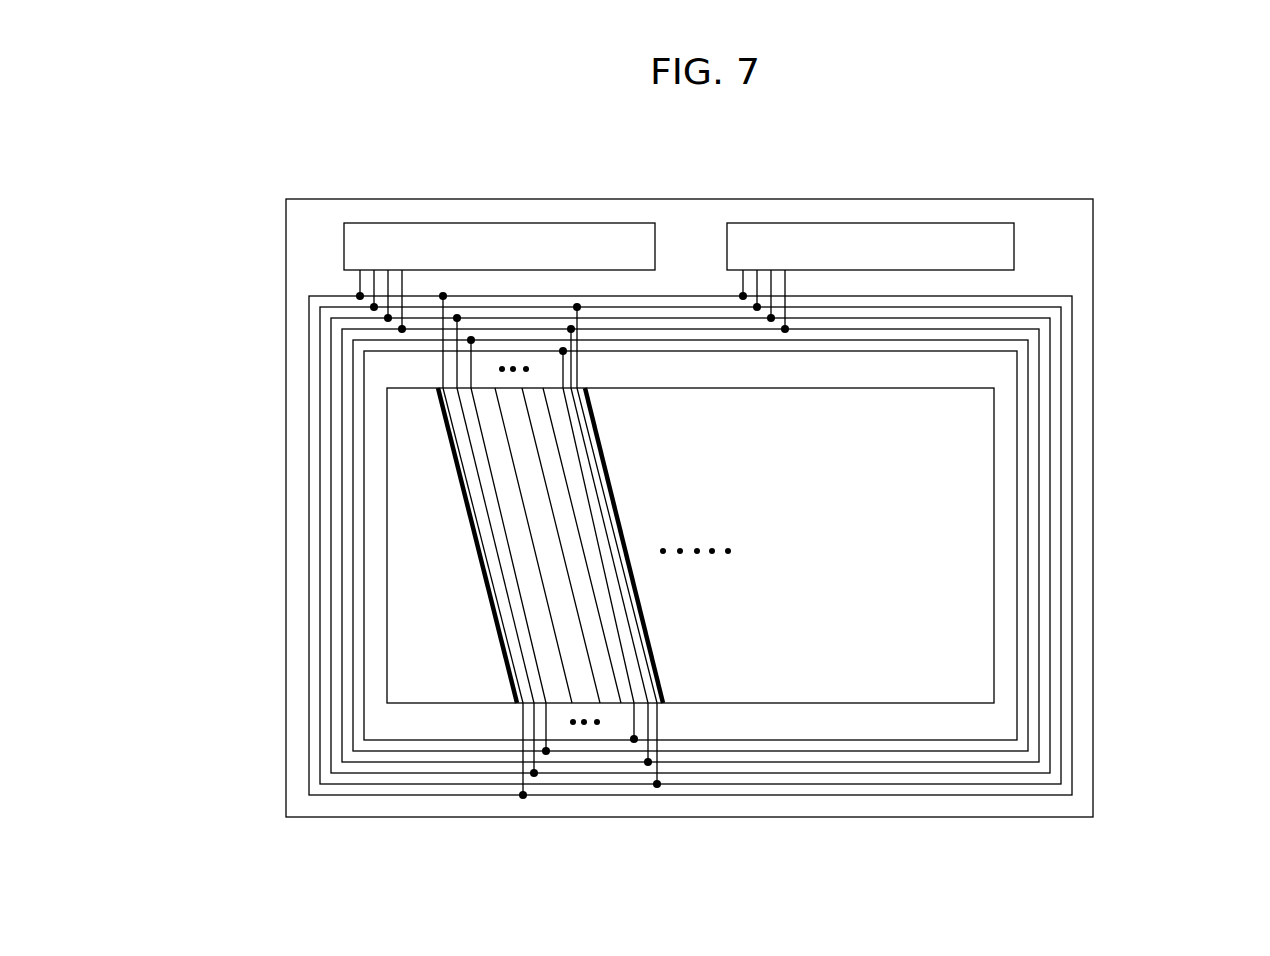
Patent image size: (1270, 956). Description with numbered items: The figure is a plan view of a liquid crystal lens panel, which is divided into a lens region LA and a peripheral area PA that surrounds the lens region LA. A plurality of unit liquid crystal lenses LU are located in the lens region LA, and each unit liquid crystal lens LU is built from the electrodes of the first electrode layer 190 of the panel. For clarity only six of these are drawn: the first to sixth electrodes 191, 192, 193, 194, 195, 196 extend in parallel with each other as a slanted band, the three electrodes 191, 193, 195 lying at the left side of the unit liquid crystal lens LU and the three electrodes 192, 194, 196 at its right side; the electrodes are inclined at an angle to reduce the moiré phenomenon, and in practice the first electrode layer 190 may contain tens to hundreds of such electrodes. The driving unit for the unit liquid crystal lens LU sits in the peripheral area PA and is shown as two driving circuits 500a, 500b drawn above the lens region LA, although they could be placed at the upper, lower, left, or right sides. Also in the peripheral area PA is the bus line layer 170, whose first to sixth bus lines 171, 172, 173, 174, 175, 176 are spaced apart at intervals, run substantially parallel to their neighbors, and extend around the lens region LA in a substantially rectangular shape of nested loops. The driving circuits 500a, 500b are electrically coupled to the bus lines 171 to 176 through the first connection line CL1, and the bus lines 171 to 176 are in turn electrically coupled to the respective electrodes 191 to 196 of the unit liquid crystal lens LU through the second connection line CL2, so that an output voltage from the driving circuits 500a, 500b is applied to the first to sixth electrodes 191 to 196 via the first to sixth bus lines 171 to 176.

The driving circuit 500a is at (452, 222).
The driving circuit 500b is at (798, 222).
The peripheral area PA is at (1031, 233).
The lens region LA is at (941, 640).
The unit liquid crystal lens LU is at (636, 485).
The first connection line CL1 is at (360, 288).
The second connection line CL2 is at (442, 364).
The bus line layer 170 is at (777, 545).
The first bus line 171 is at (1073, 408).
The second bus line 172 is at (1062, 443).
The third bus line 173 is at (1051, 478).
The fourth bus line 174 is at (1040, 513).
The fifth bus line 175 is at (1029, 548).
The sixth bus line 176 is at (1190, 402).
The first electrode layer 190 is at (400, 545).
The first electrode 191 is at (437, 402).
The second electrode 192 is at (628, 587).
The third electrode 193 is at (462, 443).
The fourth electrode 194 is at (610, 547).
The fifth electrode 195 is at (482, 480).
The sixth electrode 196 is at (592, 510).